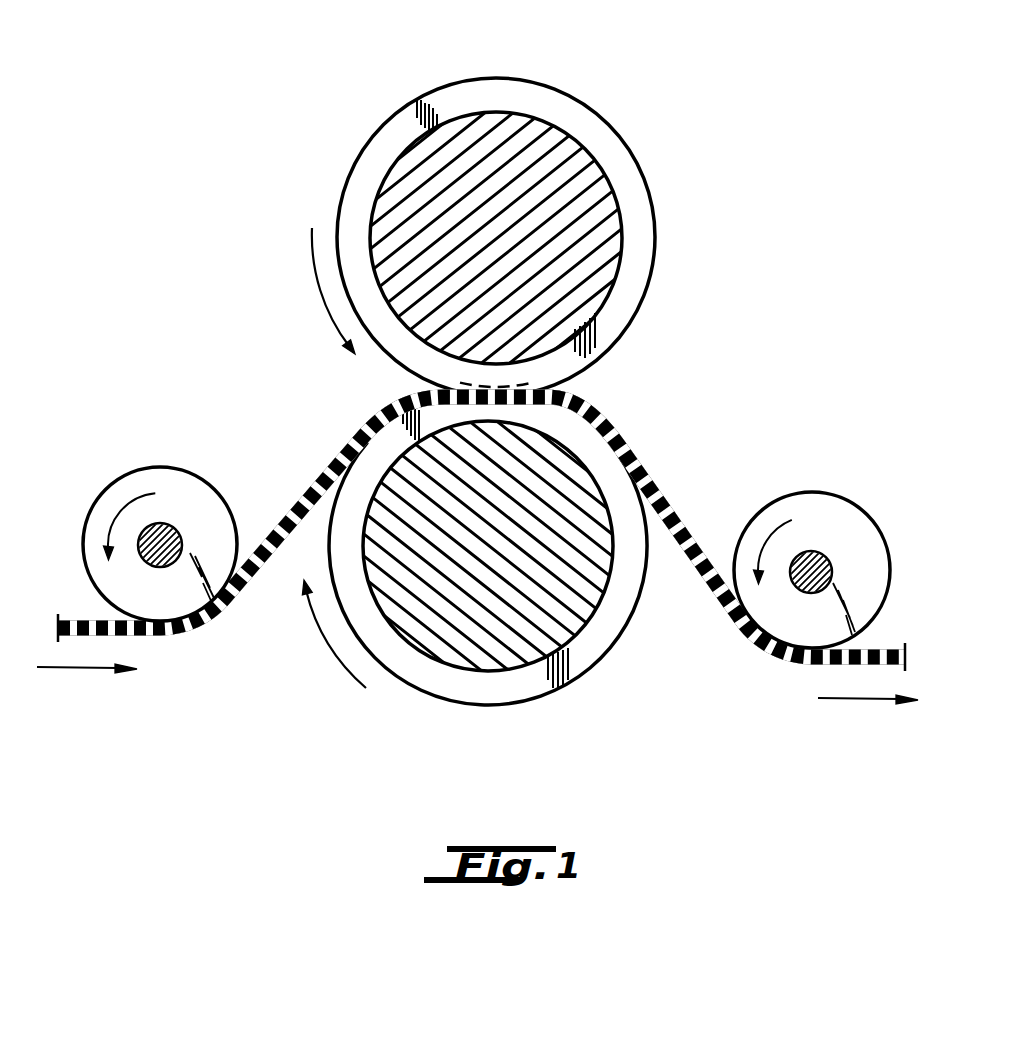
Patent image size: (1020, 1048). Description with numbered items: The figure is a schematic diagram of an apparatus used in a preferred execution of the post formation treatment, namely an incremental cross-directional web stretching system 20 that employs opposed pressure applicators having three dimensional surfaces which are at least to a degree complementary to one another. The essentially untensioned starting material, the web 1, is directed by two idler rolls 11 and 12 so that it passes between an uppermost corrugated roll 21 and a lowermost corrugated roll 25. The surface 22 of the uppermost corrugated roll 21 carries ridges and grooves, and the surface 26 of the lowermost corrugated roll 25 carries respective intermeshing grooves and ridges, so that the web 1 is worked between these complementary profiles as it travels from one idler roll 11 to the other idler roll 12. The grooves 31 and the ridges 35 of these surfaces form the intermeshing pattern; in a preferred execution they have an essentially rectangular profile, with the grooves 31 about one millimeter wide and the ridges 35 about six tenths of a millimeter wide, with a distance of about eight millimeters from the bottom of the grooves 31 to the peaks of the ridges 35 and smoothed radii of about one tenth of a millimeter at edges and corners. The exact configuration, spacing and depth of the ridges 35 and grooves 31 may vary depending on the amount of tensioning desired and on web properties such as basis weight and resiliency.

The web 1 is at (67, 617).
The idler roll 11 is at (178, 490).
The idler roll 12 is at (825, 522).
The incremental cross-directional web stretching system 20 is at (477, 445).
The uppermost corrugated roll 21 is at (578, 152).
The surface of the uppermost corrugated roll 22 is at (350, 174).
The lowermost corrugated roll 25 is at (525, 662).
The surface of the lowermost corrugated roll 26 is at (435, 698).
The grooves 31 is at (533, 445).
The ridges 35 is at (483, 421).